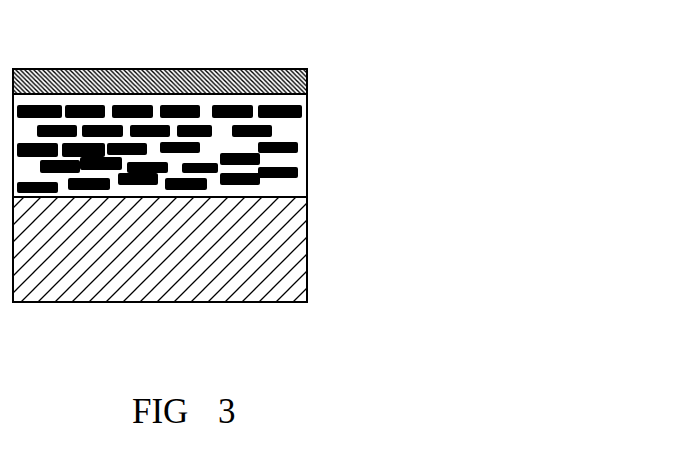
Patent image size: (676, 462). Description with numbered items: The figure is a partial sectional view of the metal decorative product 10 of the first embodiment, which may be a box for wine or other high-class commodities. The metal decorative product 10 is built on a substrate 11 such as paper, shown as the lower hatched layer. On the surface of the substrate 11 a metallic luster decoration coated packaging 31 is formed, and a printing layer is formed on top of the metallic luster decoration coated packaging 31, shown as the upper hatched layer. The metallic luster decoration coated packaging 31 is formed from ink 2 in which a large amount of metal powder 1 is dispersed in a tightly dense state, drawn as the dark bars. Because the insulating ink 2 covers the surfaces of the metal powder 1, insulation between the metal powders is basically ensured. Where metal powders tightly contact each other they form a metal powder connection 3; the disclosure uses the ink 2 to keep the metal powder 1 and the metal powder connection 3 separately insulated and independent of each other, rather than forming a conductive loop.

The metal decorative product 10 is at (369, 50).
The substrate 11 is at (307, 250).
The metallic luster decoration coated packaging 31 is at (447, 185).
The metal powder 1 is at (307, 113).
The metal powder connection 3 is at (297, 177).
The ink 2 is at (297, 187).